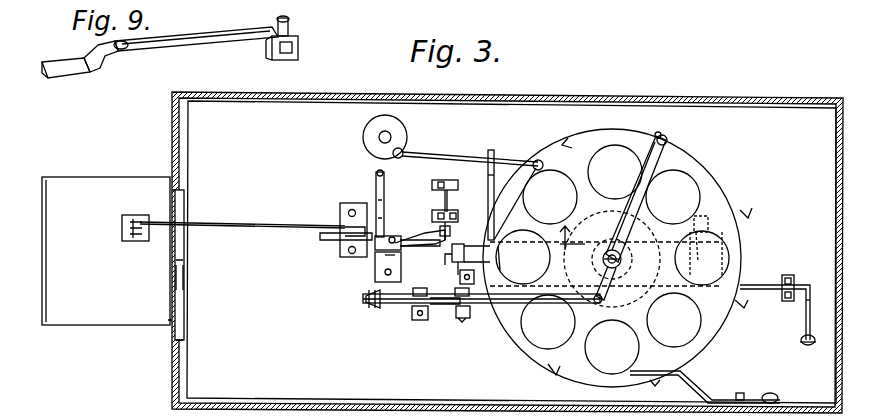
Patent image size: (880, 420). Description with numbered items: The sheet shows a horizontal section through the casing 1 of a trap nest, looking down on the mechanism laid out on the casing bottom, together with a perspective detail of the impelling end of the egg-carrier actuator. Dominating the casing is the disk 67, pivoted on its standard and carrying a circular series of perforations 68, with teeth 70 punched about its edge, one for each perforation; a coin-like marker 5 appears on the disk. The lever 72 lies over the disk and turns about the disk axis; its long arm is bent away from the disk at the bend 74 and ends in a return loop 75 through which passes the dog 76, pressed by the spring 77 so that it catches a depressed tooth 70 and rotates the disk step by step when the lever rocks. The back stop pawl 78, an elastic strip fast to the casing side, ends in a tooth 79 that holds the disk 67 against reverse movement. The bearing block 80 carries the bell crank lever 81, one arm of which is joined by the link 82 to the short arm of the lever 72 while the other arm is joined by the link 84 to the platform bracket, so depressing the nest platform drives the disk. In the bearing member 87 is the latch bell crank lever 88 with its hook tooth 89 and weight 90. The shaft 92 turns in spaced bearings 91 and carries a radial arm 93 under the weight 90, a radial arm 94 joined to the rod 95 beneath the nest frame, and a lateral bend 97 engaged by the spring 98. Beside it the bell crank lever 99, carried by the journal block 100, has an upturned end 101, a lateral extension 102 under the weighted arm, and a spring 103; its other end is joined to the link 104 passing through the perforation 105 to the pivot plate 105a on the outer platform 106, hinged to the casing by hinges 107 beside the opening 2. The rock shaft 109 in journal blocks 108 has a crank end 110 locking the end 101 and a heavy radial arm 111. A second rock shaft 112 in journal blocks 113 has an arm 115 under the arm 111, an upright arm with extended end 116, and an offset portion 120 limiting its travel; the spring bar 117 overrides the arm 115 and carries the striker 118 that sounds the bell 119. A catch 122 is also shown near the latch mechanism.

In FIG. 3, the casing 1 is at (620, 98).
In FIG. 3, the opening 2 is at (186, 282).
In FIG. 3, the coin 5 is at (706, 245).
In FIG. 3, the disk 67 is at (526, 352).
In FIG. 3, the perforations 68 is at (610, 259).
In FIG. 3, the teeth 70 is at (570, 140).
In FIG. 9, the lever 72 is at (72, 77).
In FIG. 3, the lever 72 is at (622, 306).
In FIG. 9, the bent portion 74 is at (98, 62).
In FIG. 3, the bent portion 74 is at (636, 222).
In FIG. 9, the return loop 75 is at (300, 49).
In FIG. 3, the return loop 75 is at (664, 138).
In FIG. 9, the dog 76 is at (288, 26).
In FIG. 3, the dog 76 is at (670, 142).
In FIG. 9, the spring 77 is at (222, 32).
In FIG. 3, the spring 77 is at (638, 172).
In FIG. 3, the back stop pawl 78 is at (692, 380).
In FIG. 3, the tooth 79 is at (662, 391).
In FIG. 3, the bearing block 80 is at (408, 310).
In FIG. 3, the bell crank lever 81 is at (440, 310).
In FIG. 3, the link 82 is at (468, 306).
In FIG. 3, the link 84 is at (462, 322).
In FIG. 3, the bearing member 87 is at (376, 258).
In FIG. 3, the bell crank lever 88 is at (523, 257).
In FIG. 3, the tooth 89 is at (380, 263).
In FIG. 3, the weight 90 is at (513, 257).
In FIG. 3, the bearings 91 is at (470, 306).
In FIG. 3, the shaft 92 is at (756, 284).
In FIG. 3, the radial arm 93 is at (472, 276).
In FIG. 3, the radial arm 94 is at (806, 314).
In FIG. 3, the rod 95 is at (804, 344).
In FIG. 3, the lateral bend 97 is at (622, 256).
In FIG. 3, the spring 98 is at (712, 254).
In FIG. 3, the bell crank lever 99 is at (342, 225).
In FIG. 3, the journal block 100 is at (342, 246).
In FIG. 3, the upturned end 101 is at (442, 232).
In FIG. 3, the lateral extension 102 is at (401, 266).
In FIG. 3, the spring 103 is at (376, 190).
In FIG. 3, the link 104 is at (226, 222).
In FIG. 3, the perforation 105 is at (190, 238).
In FIG. 3, the pivot plate 105a is at (124, 232).
In FIG. 3, the platform 106 is at (106, 251).
In FIG. 3, the hinges 107 is at (172, 193).
In FIG. 3, the journal blocks 108 is at (436, 196).
In FIG. 3, the rock shaft 109 is at (461, 206).
In FIG. 3, the crank end 110 is at (465, 228).
In FIG. 3, the radial arm 111 is at (520, 180).
In FIG. 3, the rock shaft 112 is at (605, 264).
In FIG. 3, the journal blocks 113 is at (579, 232).
In FIG. 3, the arm 115 is at (492, 150).
In FIG. 3, the extended end 116 is at (587, 242).
In FIG. 3, the spring bar 117 is at (430, 152).
In FIG. 3, the striker 118 is at (393, 153).
In FIG. 3, the bell 119 is at (364, 134).
In FIG. 3, the offset portion 120 is at (550, 197).
In FIG. 3, the catch 122 is at (451, 264).